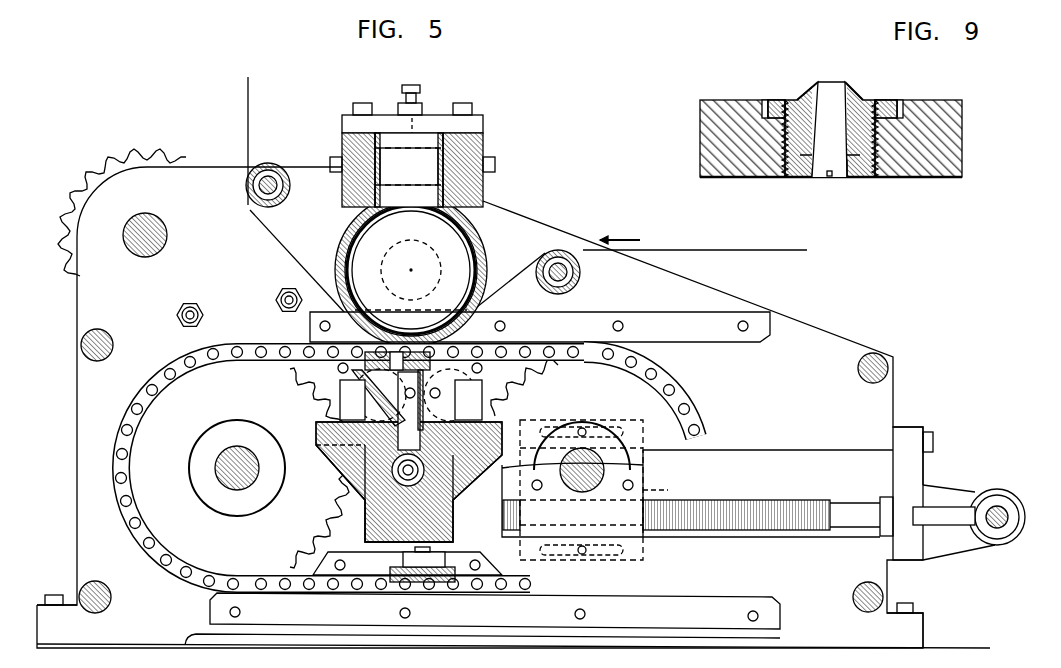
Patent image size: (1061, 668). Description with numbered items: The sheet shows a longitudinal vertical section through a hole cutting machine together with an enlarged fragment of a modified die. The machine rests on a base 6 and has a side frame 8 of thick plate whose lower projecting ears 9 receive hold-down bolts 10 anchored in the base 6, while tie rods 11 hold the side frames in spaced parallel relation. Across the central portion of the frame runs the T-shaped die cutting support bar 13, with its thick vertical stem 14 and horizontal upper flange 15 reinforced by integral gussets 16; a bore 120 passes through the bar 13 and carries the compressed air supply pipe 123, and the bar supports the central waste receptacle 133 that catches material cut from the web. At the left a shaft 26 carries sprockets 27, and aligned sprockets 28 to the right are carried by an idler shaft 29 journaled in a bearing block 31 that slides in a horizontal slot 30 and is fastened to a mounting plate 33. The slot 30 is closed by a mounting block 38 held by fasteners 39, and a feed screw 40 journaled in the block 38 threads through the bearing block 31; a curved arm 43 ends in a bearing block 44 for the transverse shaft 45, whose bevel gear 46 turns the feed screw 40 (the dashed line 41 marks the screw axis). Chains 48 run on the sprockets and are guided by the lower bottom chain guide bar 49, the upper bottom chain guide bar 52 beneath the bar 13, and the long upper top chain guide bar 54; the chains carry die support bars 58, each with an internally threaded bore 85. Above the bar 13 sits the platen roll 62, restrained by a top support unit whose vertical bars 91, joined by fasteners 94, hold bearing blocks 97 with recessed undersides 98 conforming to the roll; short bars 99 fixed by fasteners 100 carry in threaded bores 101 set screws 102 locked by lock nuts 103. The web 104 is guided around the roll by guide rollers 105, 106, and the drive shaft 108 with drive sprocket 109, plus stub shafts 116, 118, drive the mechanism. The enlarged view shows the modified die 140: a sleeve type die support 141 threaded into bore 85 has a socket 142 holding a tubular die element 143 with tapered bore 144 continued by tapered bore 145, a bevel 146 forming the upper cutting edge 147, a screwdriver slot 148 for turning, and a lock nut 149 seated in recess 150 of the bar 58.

In FIG. 5, the base 6 is at (965, 648).
In FIG. 5, the side frame 8 is at (805, 324).
In FIG. 5, the projecting ear 9 is at (40, 615).
In FIG. 5, the hold-down bolt 10 is at (58, 595).
In FIG. 5, the tie rod 11 is at (113, 345).
In FIG. 5, the die cutting support bar 13 is at (456, 498).
In FIG. 5, the vertical stem 14 is at (455, 528).
In FIG. 5, the horizontal upper flange 15 is at (316, 428).
In FIG. 5, the gusset 16 is at (334, 462).
In FIG. 5, the shaft 26 is at (252, 480).
In FIG. 5, the sprocket 27 is at (116, 497).
In FIG. 5, the sprocket 28 is at (665, 410).
In FIG. 5, the idler shaft 29 is at (604, 494).
In FIG. 5, the horizontal slot 30 is at (790, 450).
In FIG. 5, the bearing block 31 is at (645, 474).
In FIG. 5, the mounting plate 33 is at (643, 552).
In FIG. 5, the mounting block 38 is at (912, 466).
In FIG. 5, the fastener 39 is at (933, 440).
In FIG. 5, the feed screw 40 is at (776, 500).
In FIG. 5, the screw axis 41 is at (666, 491).
In FIG. 5, the curved arm 43 is at (962, 524).
In FIG. 5, the bearing block 44 is at (1006, 535).
In FIG. 5, the shaft 45 is at (1002, 510).
In FIG. 5, the bevel gear 46 is at (990, 490).
In FIG. 5, the chain 48 is at (210, 362).
In FIG. 5, the lower bottom chain guide bar 49 is at (715, 598).
In FIG. 5, the upper bottom chain guide bar 52 is at (482, 555).
In FIG. 5, the upper top chain guide bar 54 is at (652, 320).
In FIG. 5, the die support bar 58 is at (430, 370).
In FIG. 9, the die support bar 58 is at (940, 178).
In FIG. 5, the platen roll 62 is at (493, 272).
In FIG. 9, the internally threaded bore 85 is at (878, 150).
In FIG. 5, the bar 91 is at (342, 182).
In FIG. 5, the fastener 94 is at (332, 158).
In FIG. 5, the bearing block 97 is at (440, 164).
In FIG. 5, the recess 98 is at (408, 195).
In FIG. 5, the short bar 99 is at (483, 126).
In FIG. 5, the fastener 100 is at (362, 110).
In FIG. 5, the internally threaded bore 101 is at (418, 125).
In FIG. 5, the set screw 102 is at (419, 93).
In FIG. 5, the lock nut 103 is at (399, 108).
In FIG. 5, the web 104 is at (680, 250).
In FIG. 5, the guide roller 105 is at (582, 274).
In FIG. 5, the guide roller 106 is at (272, 164).
In FIG. 5, the drive shaft 108 is at (167, 234).
In FIG. 5, the drive sprocket 109 is at (142, 158).
In FIG. 5, the first stub shaft 116 is at (190, 302).
In FIG. 5, the second stub shaft 118 is at (289, 288).
In FIG. 5, the bore 120 is at (424, 478).
In FIG. 5, the compressed air supply pipe 123 is at (405, 480).
In FIG. 5, the central waste receptacle 133 is at (388, 415).
In FIG. 9, the die 140 is at (858, 92).
In FIG. 9, the sleeve type die support 141 is at (794, 176).
In FIG. 9, the socket 142 is at (880, 138).
In FIG. 9, the die element 143 is at (814, 110).
In FIG. 9, the tapered bore 144 is at (812, 142).
In FIG. 9, the tapered bore 145 is at (847, 177).
In FIG. 9, the bevel 146 is at (803, 95).
In FIG. 9, the upper cutting edge 147 is at (848, 84).
In FIG. 9, the screwdriver slot 148 is at (830, 177).
In FIG. 9, the lock nut 149 is at (892, 100).
In FIG. 9, the recess 150 is at (900, 110).